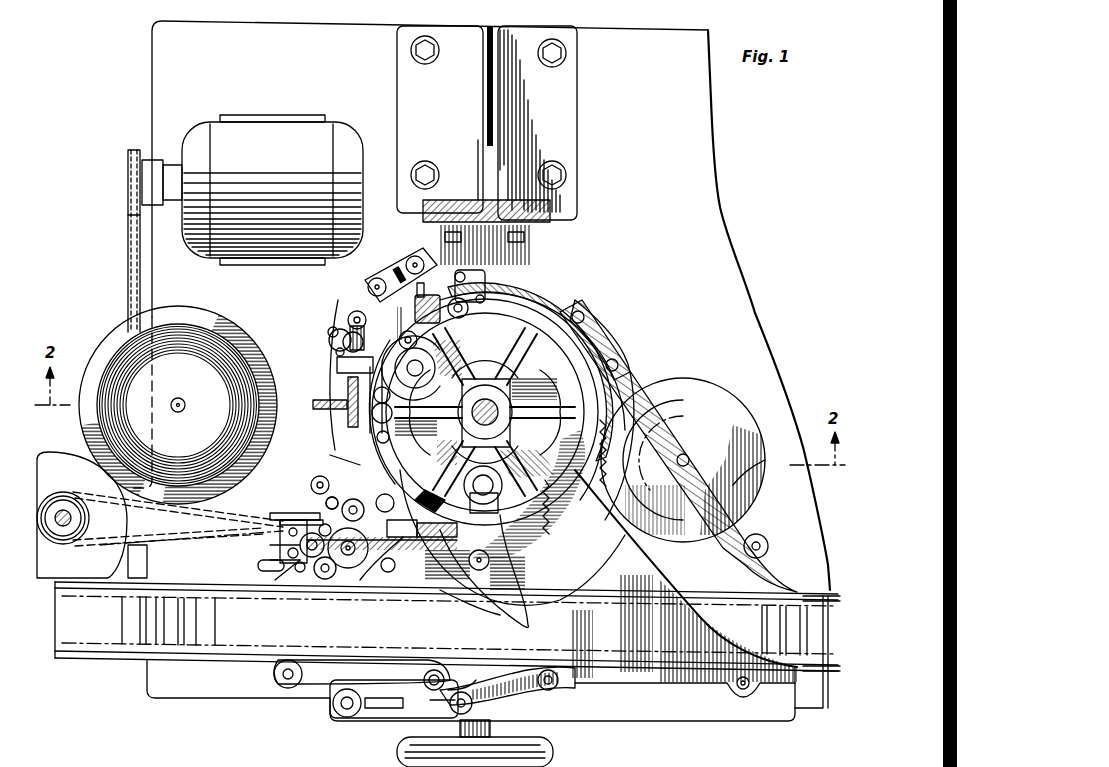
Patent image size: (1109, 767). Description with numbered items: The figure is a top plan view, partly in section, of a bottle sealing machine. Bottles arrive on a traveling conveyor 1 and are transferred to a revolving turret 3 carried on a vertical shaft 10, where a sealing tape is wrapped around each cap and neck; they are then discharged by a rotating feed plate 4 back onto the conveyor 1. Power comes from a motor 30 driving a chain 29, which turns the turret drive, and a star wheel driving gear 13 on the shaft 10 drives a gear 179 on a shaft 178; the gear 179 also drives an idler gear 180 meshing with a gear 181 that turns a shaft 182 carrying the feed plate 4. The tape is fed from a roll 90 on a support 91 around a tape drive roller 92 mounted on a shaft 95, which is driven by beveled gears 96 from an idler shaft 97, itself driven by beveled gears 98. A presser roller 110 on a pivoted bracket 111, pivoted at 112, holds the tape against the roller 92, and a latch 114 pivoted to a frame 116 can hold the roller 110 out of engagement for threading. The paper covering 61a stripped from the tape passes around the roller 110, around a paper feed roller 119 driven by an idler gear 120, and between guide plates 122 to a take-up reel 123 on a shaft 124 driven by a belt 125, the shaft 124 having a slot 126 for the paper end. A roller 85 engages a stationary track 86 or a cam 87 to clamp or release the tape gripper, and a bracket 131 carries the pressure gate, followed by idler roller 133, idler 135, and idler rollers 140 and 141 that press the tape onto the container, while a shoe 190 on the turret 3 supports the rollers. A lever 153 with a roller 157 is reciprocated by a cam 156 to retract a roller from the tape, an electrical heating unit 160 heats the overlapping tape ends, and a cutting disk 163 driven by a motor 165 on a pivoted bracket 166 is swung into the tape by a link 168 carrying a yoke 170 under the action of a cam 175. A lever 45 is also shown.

The traveling conveyor 1 is at (232, 642).
The revolving turret 3 is at (585, 333).
The rotating feed plate 4 is at (737, 418).
The vertical shaft 10 is at (487, 400).
The star wheel driving gear 13 is at (602, 351).
The chain 29 is at (128, 238).
The motor 30 is at (252, 190).
The lever 45 is at (627, 393).
The paper covering 61a is at (203, 543).
The roller 85 is at (375, 283).
The stationary track 86 is at (345, 462).
The cam 87 is at (337, 364).
The roll 90 is at (193, 348).
The support 91 is at (232, 332).
The tape drive roller 92 is at (358, 560).
The shaft 95 is at (330, 580).
The beveled gears 96 is at (390, 572).
The idler shaft 97 is at (330, 452).
The beveled gears 98 is at (337, 350).
The presser roller 110 is at (313, 558).
The bracket 111 is at (262, 570).
The pivot 112 is at (298, 573).
The latch 114 is at (282, 545).
The frame 116 is at (275, 562).
The paper feed roller 119 is at (278, 582).
The idler gear 120 is at (301, 523).
The guide plates 122 is at (283, 520).
The take-up reel 123 is at (82, 500).
The shaft 124 is at (70, 512).
The belt 125 is at (128, 562).
The slot 126 is at (62, 505).
The bracket 131 is at (440, 432).
The idler roller 133 is at (461, 420).
The idler 135 is at (462, 402).
The idler roller 140 is at (465, 333).
The idler roller 141 is at (487, 287).
The lever 153 is at (352, 312).
The cam 156 is at (342, 332).
The roller 157 is at (332, 331).
The electrical heating unit 160 is at (433, 270).
The cutting disk 163 is at (422, 528).
The motor 165 is at (340, 476).
The bracket 166 is at (316, 408).
The link 168 is at (348, 388).
The yoke 170 is at (357, 312).
The cam 175 is at (352, 330).
The shaft 178 is at (484, 572).
The gear 179 is at (440, 615).
The idler gear 180 is at (612, 540).
The gear 181 is at (735, 485).
The shaft 182 is at (688, 454).
The shoe 190 is at (518, 327).